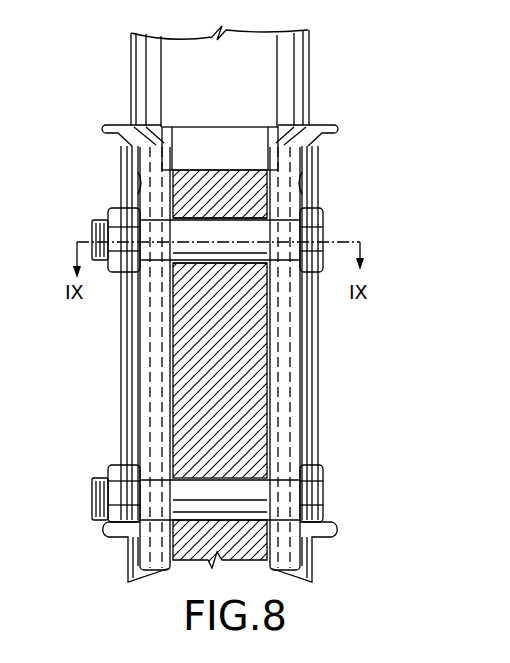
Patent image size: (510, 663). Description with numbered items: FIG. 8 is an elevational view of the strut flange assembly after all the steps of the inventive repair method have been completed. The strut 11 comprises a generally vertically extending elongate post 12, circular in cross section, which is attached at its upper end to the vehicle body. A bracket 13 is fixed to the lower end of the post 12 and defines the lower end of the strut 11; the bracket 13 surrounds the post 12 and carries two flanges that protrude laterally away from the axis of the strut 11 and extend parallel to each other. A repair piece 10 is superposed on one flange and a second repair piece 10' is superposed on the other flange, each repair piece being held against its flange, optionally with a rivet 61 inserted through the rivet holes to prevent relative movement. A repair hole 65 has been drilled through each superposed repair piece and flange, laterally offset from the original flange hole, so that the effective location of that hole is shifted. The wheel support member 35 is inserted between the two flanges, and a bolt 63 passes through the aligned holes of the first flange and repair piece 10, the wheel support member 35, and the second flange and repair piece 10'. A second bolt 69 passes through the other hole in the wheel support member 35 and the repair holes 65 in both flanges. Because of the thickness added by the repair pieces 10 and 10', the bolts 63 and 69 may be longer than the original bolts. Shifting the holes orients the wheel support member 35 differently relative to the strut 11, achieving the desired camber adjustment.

The strut 11 is at (125, 44).
The post 12 is at (305, 43).
The bracket 13 is at (130, 165).
The rivet 61 is at (302, 182).
The repair hole 65 is at (317, 226).
The second bolt 69 is at (312, 247).
The repair piece 10' is at (93, 333).
The repair piece 10 is at (342, 333).
The wheel support member 35 is at (197, 440).
The bolt 63 is at (310, 492).